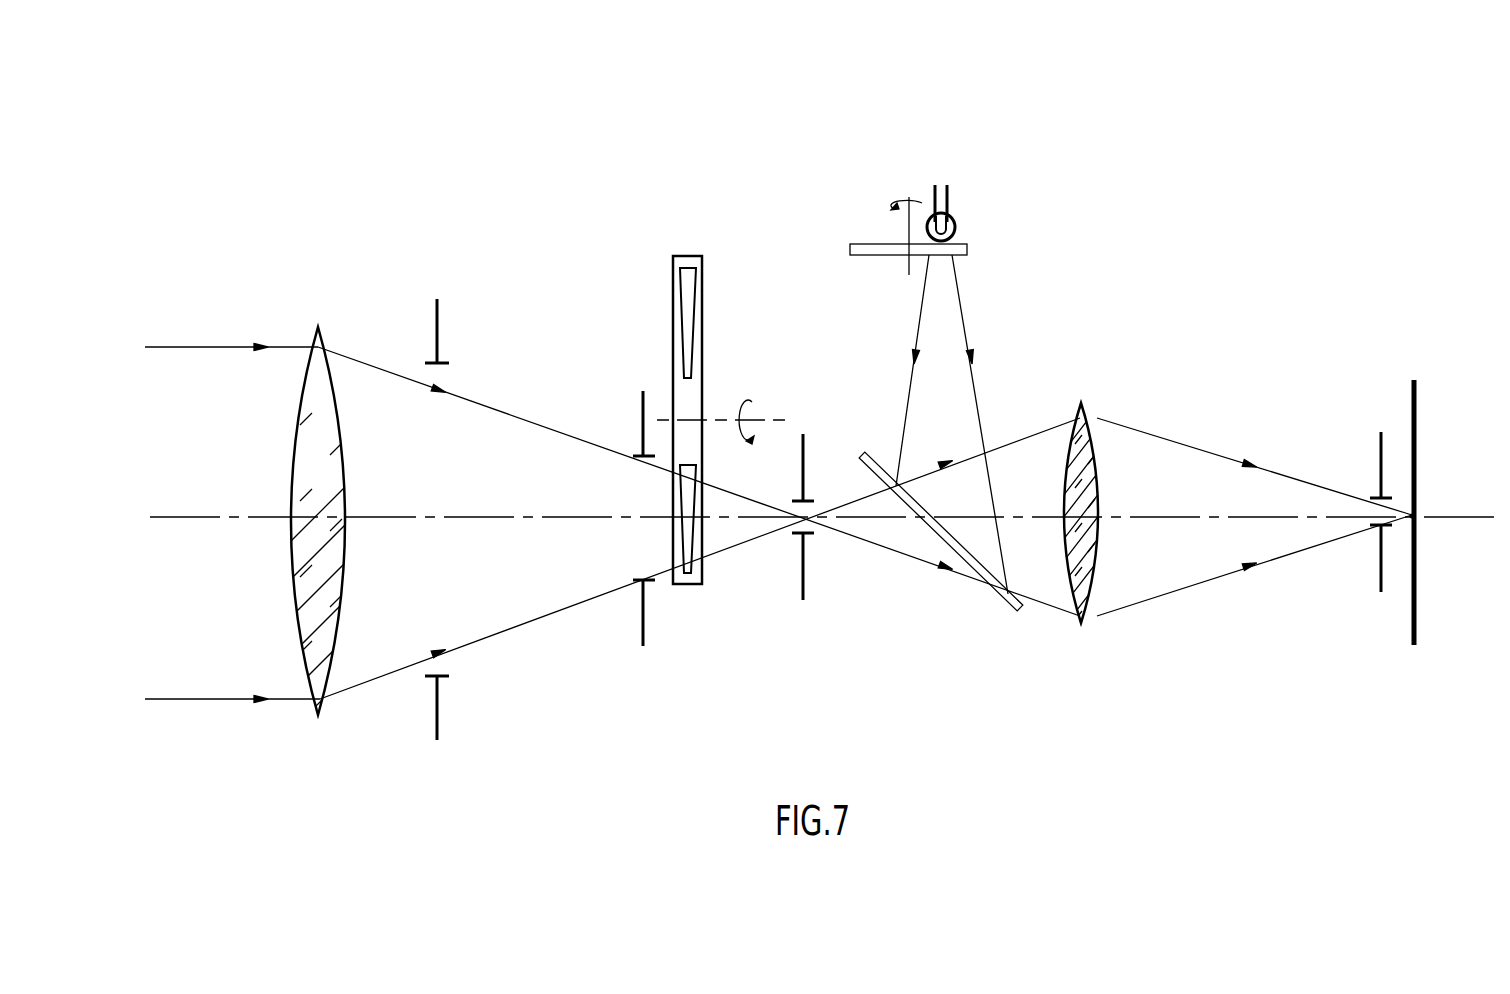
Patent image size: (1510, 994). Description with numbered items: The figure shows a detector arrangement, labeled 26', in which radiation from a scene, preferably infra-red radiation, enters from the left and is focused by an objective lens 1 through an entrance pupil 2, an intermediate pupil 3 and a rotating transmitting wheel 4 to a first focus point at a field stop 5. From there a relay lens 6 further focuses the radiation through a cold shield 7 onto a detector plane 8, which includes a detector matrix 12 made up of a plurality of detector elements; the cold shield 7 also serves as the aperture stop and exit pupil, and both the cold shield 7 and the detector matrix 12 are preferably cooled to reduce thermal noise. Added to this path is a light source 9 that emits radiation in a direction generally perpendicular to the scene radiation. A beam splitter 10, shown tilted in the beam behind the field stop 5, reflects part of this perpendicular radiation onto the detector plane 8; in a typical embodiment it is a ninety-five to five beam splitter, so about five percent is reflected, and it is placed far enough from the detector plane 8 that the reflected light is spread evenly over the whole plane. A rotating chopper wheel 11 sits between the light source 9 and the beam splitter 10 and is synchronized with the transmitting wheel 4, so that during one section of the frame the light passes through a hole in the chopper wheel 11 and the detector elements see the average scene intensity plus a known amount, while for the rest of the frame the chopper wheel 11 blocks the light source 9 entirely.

The objective lens 1 is at (332, 388).
The entrance pupil 2 is at (439, 333).
The intermediate pupil 3 is at (640, 420).
The rotating transmitting wheel 4 is at (702, 309).
The field stop 5 is at (804, 461).
The relay lens 6 is at (1066, 567).
The cold shield 7 is at (1378, 547).
The detector plane 8 is at (1413, 397).
The light source 9 is at (948, 202).
The beam splitter 10 is at (885, 467).
The rotating chopper wheel 11 is at (867, 248).
The detector matrix 12 is at (1417, 498).
The optical arrangement 26' is at (1351, 120).